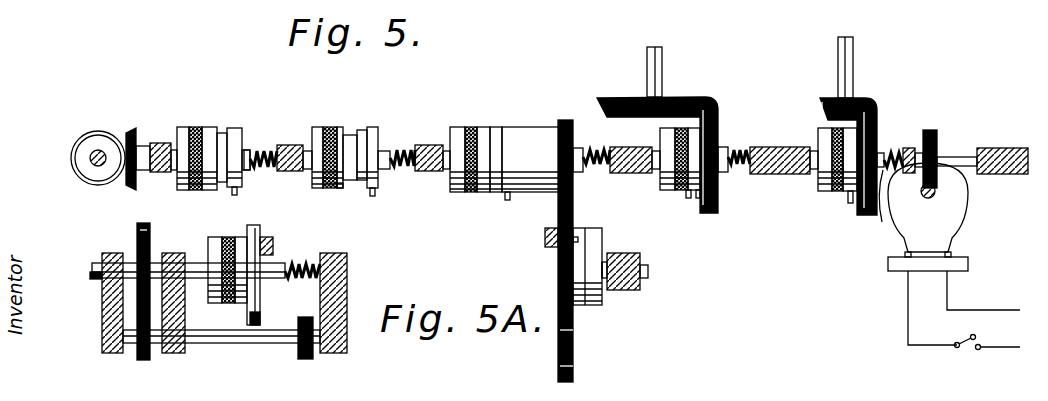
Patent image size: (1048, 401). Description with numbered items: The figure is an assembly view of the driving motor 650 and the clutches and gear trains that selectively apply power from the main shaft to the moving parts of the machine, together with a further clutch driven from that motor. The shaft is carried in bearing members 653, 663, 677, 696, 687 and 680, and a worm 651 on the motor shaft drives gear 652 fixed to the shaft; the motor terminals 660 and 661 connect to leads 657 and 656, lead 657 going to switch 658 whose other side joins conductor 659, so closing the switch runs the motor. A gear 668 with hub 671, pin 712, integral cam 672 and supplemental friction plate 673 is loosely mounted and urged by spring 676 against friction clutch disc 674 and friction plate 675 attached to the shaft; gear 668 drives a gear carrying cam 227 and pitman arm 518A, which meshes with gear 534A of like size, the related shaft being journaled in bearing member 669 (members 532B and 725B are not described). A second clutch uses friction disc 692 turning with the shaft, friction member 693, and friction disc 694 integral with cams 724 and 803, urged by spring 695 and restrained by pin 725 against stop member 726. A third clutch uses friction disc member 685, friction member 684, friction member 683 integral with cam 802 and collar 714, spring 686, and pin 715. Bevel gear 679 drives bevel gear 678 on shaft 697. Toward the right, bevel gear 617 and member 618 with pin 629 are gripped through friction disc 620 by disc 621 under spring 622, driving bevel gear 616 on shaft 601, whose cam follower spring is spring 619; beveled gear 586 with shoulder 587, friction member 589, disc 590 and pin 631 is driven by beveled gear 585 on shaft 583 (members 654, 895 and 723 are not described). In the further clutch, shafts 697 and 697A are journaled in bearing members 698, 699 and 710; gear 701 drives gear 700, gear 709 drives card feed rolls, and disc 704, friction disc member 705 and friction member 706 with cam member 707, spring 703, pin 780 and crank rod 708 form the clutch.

In FIG. 5, the bevel gear 678 is at (72, 143).
In FIG. 5, the shaft 697 is at (94, 163).
In FIG. 5A, the shaft 697 is at (92, 275).
In FIG. 5, the bevel gear 679 is at (128, 131).
In FIG. 5, the bearing member 680 is at (158, 145).
In FIG. 5, the friction disc member 685 is at (181, 127).
In FIG. 5, the friction member 684 is at (198, 128).
In FIG. 5, the friction member 683 is at (212, 127).
In FIG. 5, the cam 802 is at (224, 133).
In FIG. 5, the collar 714 is at (252, 131).
In FIG. 5, the pin 715 is at (233, 191).
In FIG. 5, the spring 686 is at (247, 178).
In FIG. 5, the bearing support 687 is at (292, 171).
In FIG. 5, the friction disc 692 is at (314, 128).
In FIG. 5, the friction member 693 is at (328, 128).
In FIG. 5, the friction disc 694 is at (346, 135).
In FIG. 5, the cam 803 is at (362, 131).
In FIG. 5, the cam 724 is at (375, 132).
In FIG. 5, the pin 725 is at (372, 196).
In FIG. 5, the pin 723 is at (341, 188).
In FIG. 5, the spring 695 is at (406, 150).
In FIG. 5, the bearing support 696 is at (429, 171).
In FIG. 5, the friction plate 675 is at (456, 127).
In FIG. 5, the friction clutch disc 674 is at (470, 127).
In FIG. 5, the supplemental friction plate 673 is at (486, 127).
In FIG. 5, the cam 672 is at (520, 120).
In FIG. 5, the hub 671 is at (545, 110).
In FIG. 5, the pin 712 is at (507, 193).
In FIG. 5, the gear 668 is at (566, 120).
In FIG. 5, the spring 676 is at (598, 148).
In FIG. 5, the bearing member 677 is at (628, 172).
In FIG. 5, the shaft 601 is at (662, 52).
In FIG. 5, the bevel gear 616 is at (696, 96).
In FIG. 5, the bevel gear 617 is at (708, 106).
In FIG. 5, the member 618 is at (693, 138).
In FIG. 5, the spring 619 is at (682, 190).
In FIG. 5, the friction disc 620 is at (688, 197).
In FIG. 5, the pin 629 is at (698, 198).
In FIG. 5, the spring 622 is at (737, 170).
In FIG. 5, the bearing member 663 is at (783, 142).
In FIG. 5, the disc 590 is at (830, 168).
In FIG. 5, the friction member 589 is at (838, 192).
In FIG. 5, the pin 631 is at (848, 203).
In FIG. 5, the shaft 583 is at (853, 50).
In FIG. 5, the beveled gear 585 is at (858, 100).
In FIG. 5, the shoulder 587 is at (838, 115).
In FIG. 5, the beveled gear 586 is at (874, 118).
In FIG. 5, the bearing member 653 is at (905, 152).
In FIG. 5, the gear 652 is at (932, 132).
In FIG. 5, the link 654 is at (883, 172).
In FIG. 5, the disc 621 is at (942, 157).
In FIG. 5, the block 895 is at (1002, 153).
In FIG. 5, the motor 650 is at (966, 200).
In FIG. 5, the terminal 661 is at (950, 256).
In FIG. 5, the worm 651 is at (936, 192).
In FIG. 5, the terminal 660 is at (905, 254).
In FIG. 5, the lead 656 is at (948, 272).
In FIG. 5, the lead 657 is at (908, 310).
In FIG. 5, the switch 658 is at (949, 333).
In FIG. 5, the conductor 659 is at (1000, 337).
In FIG. 5, the pitman arm 518A is at (545, 238).
In FIG. 5, the cam 227 is at (587, 239).
In FIG. 5, the stop member 726 is at (578, 237).
In FIG. 5, the coupling block 725B is at (648, 271).
In FIG. 5, the bearing member 669 is at (627, 284).
In FIG. 5, the gear 532B is at (573, 328).
In FIG. 5, the gear 534A is at (573, 365).
In FIG. 5A, the bearing member 699 is at (102, 297).
In FIG. 5A, the gear 700 is at (145, 360).
In FIG. 5A, the gear 701 is at (137, 229).
In FIG. 5A, the bearing member 698 is at (176, 356).
In FIG. 5A, the second shaft 697A is at (197, 337).
In FIG. 5A, the disc 704 is at (210, 246).
In FIG. 5A, the friction disc member 705 is at (222, 240).
In FIG. 5A, the friction member 706 is at (250, 229).
In FIG. 5A, the cam member 707 is at (261, 235).
In FIG. 5A, the crank rod 708 is at (274, 246).
In FIG. 5A, the spring 703 is at (297, 285).
In FIG. 5A, the bearing member 710 is at (347, 270).
In FIG. 5A, the pin 780 is at (251, 320).
In FIG. 5A, the gear 709 is at (303, 359).